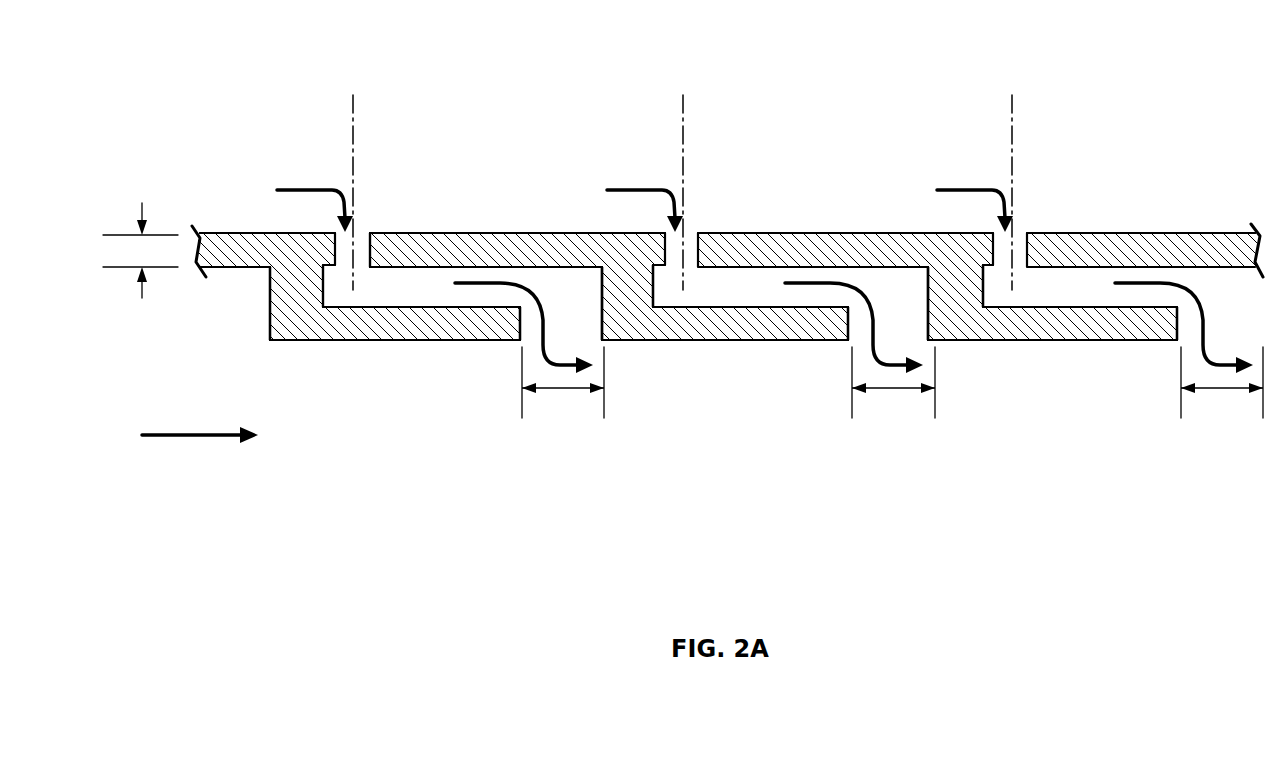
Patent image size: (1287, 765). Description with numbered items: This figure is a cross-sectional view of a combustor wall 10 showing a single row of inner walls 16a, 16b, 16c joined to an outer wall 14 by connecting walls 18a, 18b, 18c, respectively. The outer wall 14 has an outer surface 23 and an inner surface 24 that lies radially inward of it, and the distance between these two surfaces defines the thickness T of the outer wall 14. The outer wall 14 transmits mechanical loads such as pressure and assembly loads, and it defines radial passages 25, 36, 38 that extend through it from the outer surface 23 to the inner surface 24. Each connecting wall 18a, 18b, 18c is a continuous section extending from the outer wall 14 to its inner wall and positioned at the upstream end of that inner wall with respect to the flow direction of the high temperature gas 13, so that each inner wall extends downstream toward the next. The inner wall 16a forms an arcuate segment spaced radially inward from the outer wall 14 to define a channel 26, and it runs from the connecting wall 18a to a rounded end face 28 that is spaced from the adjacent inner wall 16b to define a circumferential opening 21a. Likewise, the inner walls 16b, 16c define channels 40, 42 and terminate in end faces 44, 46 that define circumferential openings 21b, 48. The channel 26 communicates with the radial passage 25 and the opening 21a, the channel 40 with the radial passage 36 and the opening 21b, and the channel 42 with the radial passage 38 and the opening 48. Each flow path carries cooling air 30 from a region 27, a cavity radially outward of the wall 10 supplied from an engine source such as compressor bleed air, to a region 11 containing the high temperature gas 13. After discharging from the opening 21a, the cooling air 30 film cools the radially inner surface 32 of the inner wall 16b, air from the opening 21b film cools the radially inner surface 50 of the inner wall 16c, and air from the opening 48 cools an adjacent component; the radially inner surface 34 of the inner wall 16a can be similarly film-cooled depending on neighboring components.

The wall 10 is at (685, 260).
The region 11 is at (723, 433).
The high temperature gas 13 is at (200, 438).
The outer wall 14 is at (438, 243).
The inner wall 16a is at (431, 330).
The inner wall 16b is at (761, 330).
The inner wall 16c is at (1091, 330).
The connecting wall 18a is at (305, 290).
The connecting wall 18b is at (633, 290).
The connecting wall 18c is at (963, 292).
The circumferential opening 21a is at (565, 392).
The circumferential opening 21b is at (895, 392).
The outer surface 23 is at (465, 236).
The inner surface 24 is at (538, 267).
The radial passage 25 is at (364, 240).
The channel 26 is at (421, 286).
The region 27 is at (727, 136).
The end face 28 is at (517, 342).
The cooling air 30 is at (325, 189).
The radially inner surface 32 is at (682, 342).
The radially inner surface 34 is at (352, 342).
The radial passage 36 is at (698, 236).
The radial passage 38 is at (1023, 236).
The channel 40 is at (750, 286).
The channel 42 is at (1080, 286).
The end face 44 is at (847, 342).
The end face 46 is at (1177, 342).
The circumferential opening 48 is at (1223, 392).
The radially inner surface 50 is at (1012, 342).
The thickness T is at (140, 236).